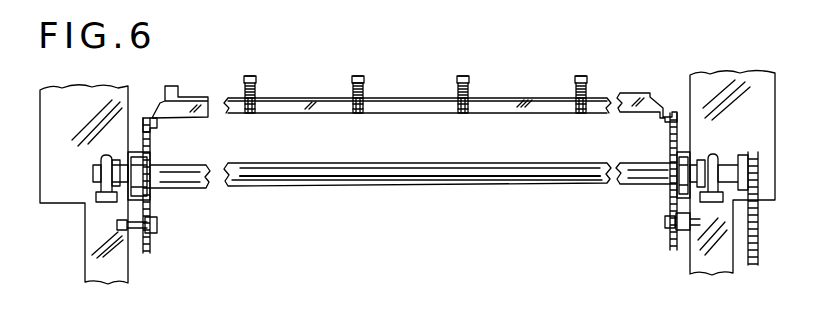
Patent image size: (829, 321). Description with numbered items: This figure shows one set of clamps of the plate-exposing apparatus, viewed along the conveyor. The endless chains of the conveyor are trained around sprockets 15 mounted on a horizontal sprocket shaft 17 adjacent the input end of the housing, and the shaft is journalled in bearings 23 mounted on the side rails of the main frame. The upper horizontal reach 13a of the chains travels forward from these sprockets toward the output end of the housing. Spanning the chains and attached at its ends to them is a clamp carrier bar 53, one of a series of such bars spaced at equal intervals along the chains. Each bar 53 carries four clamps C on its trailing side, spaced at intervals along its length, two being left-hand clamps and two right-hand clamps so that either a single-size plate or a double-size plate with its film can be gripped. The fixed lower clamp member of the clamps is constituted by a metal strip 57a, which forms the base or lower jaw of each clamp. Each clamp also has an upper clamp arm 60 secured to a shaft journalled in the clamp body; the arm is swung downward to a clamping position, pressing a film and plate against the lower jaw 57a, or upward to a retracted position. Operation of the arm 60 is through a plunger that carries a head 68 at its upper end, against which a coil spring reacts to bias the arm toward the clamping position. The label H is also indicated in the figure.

The upper horizontal reach 13a is at (143, 125).
The sprockets 15 is at (152, 151).
The sprocket shaft 17 is at (404, 172).
The bearings 23 is at (102, 155).
The clamp carrier bar 53 is at (648, 93).
The metal strip 57a is at (358, 114).
The upper clamp arm 60 is at (348, 97).
The head 68 is at (366, 82).
The clamps C is at (252, 72).
The hanger H is at (598, 60).